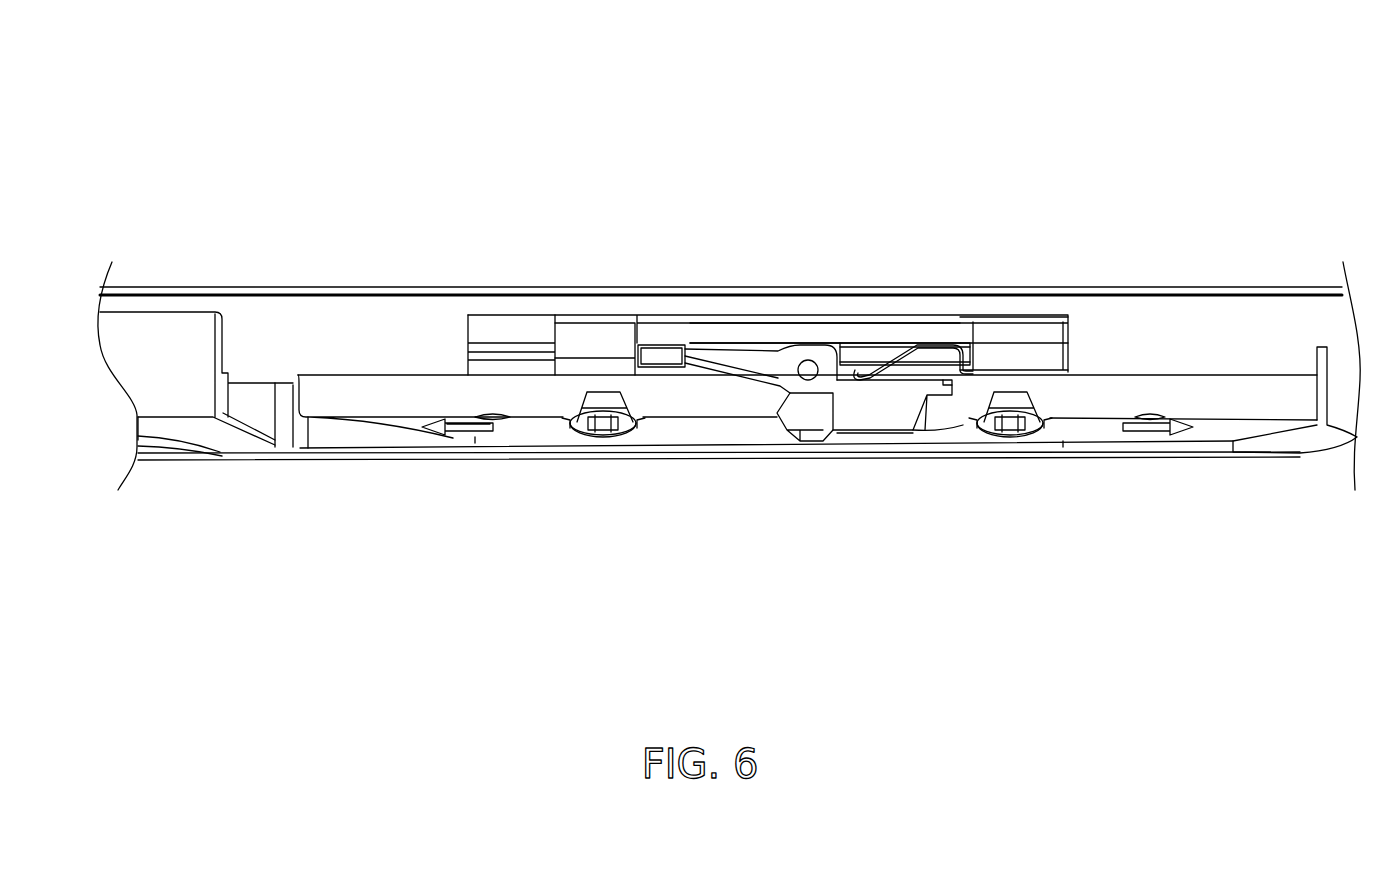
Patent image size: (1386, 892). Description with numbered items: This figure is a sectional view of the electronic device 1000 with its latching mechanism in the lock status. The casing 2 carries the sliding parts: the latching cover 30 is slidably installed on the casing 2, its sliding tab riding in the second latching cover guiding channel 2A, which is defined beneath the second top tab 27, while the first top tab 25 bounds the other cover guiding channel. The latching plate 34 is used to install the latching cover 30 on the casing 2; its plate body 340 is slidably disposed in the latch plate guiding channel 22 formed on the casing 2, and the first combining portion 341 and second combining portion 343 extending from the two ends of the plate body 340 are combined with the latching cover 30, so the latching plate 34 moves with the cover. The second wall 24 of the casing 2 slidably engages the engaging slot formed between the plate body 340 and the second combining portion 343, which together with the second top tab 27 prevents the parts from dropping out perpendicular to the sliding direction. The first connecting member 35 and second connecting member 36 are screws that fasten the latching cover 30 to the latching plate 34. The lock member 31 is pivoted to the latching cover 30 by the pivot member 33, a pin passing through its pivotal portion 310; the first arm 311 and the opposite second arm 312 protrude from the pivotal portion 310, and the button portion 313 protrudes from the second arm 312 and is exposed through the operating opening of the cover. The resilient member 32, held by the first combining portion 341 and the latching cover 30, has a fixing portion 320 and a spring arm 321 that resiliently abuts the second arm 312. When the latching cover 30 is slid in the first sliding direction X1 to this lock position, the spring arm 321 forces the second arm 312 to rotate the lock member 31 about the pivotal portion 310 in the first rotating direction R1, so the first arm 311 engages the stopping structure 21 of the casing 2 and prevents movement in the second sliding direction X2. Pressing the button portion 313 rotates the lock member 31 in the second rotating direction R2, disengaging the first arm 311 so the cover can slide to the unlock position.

The electronic device 1000 is at (1112, 90).
The casing 2 is at (177, 468).
The second latching cover guiding channel 2A is at (292, 396).
The stopping structure 21 is at (656, 368).
The latch plate guiding channel 22 is at (742, 318).
The second wall 24 is at (511, 355).
The first top tab 25 is at (1228, 333).
The second top tab 27 is at (253, 362).
The latching cover 30 is at (1252, 462).
The lock member 31 is at (818, 474).
The pivotal portion 310 is at (787, 393).
The first arm 311 is at (744, 369).
The second arm 312 is at (918, 472).
The button portion 313 is at (863, 413).
The resilient member 32 is at (931, 295).
The fixing portion 320 is at (997, 343).
The spring arm 321 is at (913, 315).
The pivot member 33 is at (808, 358).
The latching plate 34 is at (638, 302).
The plate body 340 is at (866, 330).
The first combining portion 341 is at (1050, 340).
The second combining portion 343 is at (586, 345).
The first connecting member 35 is at (1006, 455).
The second connecting member 36 is at (588, 455).
The first rotating direction R1 is at (784, 461).
The second rotating direction R2 is at (833, 461).
The first sliding direction X1 is at (697, 630).
The second sliding direction X2 is at (582, 630).